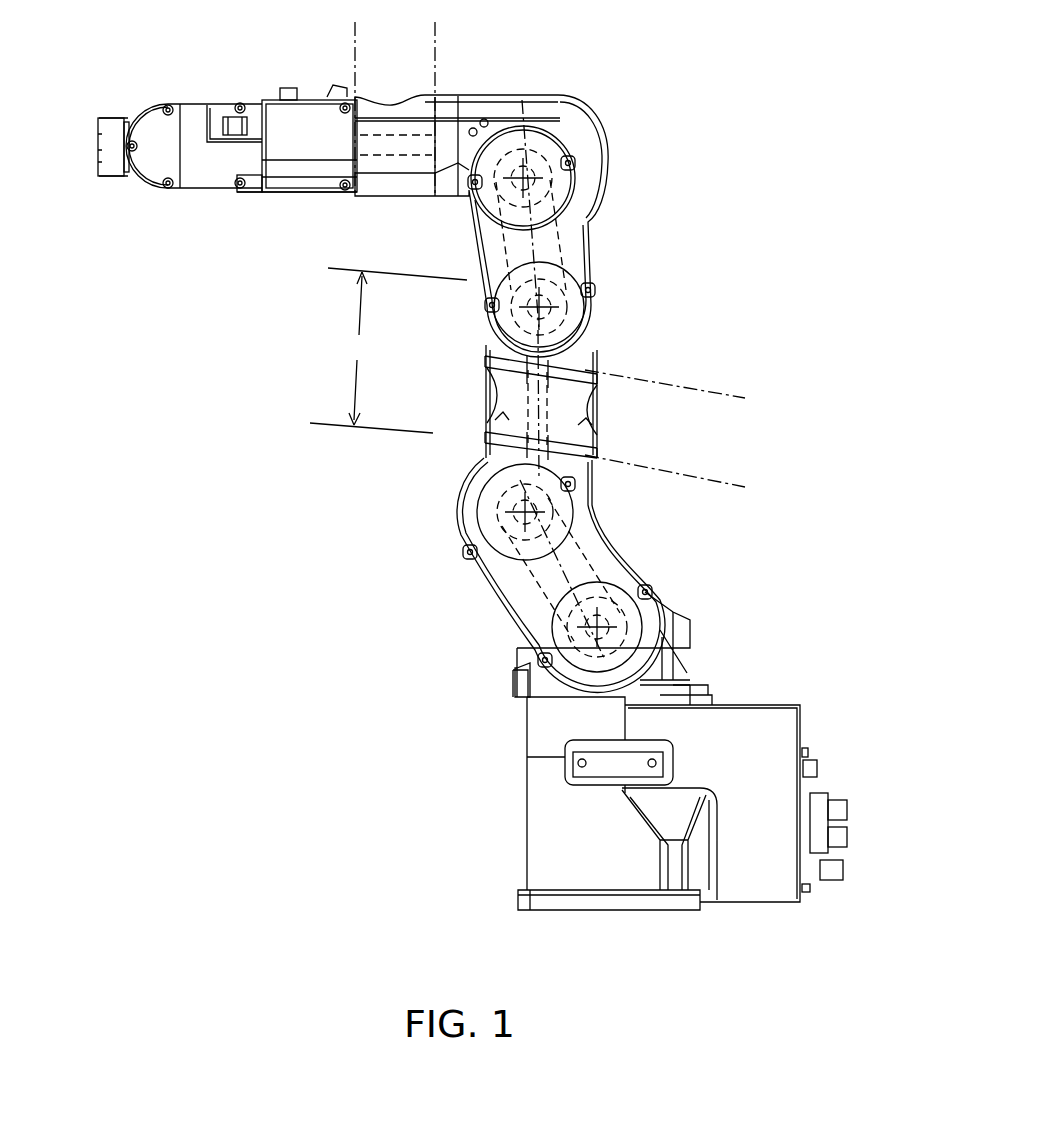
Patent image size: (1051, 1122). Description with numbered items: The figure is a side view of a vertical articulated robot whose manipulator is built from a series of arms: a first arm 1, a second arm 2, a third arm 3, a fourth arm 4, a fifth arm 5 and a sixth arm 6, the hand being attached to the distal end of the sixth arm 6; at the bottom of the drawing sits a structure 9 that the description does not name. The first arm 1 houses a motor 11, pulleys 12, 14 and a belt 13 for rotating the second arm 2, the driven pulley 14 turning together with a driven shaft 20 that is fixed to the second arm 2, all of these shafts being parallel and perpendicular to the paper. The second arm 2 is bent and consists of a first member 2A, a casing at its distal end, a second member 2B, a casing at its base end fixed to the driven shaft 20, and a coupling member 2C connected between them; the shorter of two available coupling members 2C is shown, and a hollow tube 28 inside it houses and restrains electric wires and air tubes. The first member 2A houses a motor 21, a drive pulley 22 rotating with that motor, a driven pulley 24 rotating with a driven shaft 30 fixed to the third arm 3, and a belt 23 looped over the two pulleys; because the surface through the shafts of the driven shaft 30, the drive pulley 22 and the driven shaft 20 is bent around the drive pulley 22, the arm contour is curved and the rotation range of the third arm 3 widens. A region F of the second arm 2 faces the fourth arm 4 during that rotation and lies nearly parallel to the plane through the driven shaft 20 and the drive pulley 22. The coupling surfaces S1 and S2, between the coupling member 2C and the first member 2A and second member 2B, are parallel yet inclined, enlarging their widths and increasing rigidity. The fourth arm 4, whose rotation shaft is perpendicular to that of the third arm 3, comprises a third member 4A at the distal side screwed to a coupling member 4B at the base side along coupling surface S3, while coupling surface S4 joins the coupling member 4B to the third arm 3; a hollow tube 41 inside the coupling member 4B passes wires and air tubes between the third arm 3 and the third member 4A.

The first arm 1 is at (480, 572).
The second arm 2 is at (466, 375).
The first member 2A is at (487, 319).
The second member 2B is at (478, 458).
The coupling member 2C is at (486, 390).
The third arm 3 is at (487, 97).
The fourth arm 4 is at (213, 107).
The third member 4A is at (297, 196).
The coupling member 4B is at (372, 195).
The hollow tube 41 is at (384, 160).
The fifth arm 5 is at (137, 107).
The sixth arm 6 is at (112, 177).
The base 9 is at (527, 795).
The motor 11 is at (612, 597).
The pulley 12 is at (625, 640).
The belt 13 is at (598, 567).
The driven pulley 14 is at (548, 532).
The driven shaft 20 is at (520, 510).
The motor 21 is at (553, 272).
The drive pulley 22 is at (572, 316).
The belt 23 is at (565, 245).
The driven pulley 24 is at (547, 153).
The hollow tube 28 is at (548, 435).
The driven shaft 30 is at (522, 183).
The coupling surface S1 is at (665, 382).
The coupling surface S2 is at (635, 467).
The coupling surface S3 is at (359, 35).
The coupling surface S4 is at (438, 35).
The region F is at (388, 350).